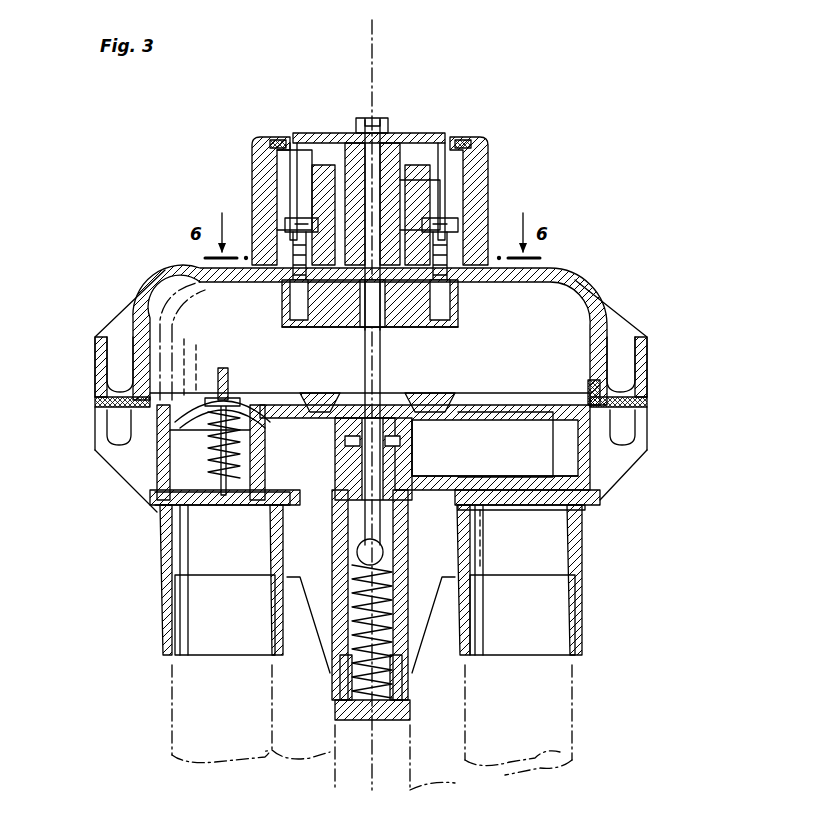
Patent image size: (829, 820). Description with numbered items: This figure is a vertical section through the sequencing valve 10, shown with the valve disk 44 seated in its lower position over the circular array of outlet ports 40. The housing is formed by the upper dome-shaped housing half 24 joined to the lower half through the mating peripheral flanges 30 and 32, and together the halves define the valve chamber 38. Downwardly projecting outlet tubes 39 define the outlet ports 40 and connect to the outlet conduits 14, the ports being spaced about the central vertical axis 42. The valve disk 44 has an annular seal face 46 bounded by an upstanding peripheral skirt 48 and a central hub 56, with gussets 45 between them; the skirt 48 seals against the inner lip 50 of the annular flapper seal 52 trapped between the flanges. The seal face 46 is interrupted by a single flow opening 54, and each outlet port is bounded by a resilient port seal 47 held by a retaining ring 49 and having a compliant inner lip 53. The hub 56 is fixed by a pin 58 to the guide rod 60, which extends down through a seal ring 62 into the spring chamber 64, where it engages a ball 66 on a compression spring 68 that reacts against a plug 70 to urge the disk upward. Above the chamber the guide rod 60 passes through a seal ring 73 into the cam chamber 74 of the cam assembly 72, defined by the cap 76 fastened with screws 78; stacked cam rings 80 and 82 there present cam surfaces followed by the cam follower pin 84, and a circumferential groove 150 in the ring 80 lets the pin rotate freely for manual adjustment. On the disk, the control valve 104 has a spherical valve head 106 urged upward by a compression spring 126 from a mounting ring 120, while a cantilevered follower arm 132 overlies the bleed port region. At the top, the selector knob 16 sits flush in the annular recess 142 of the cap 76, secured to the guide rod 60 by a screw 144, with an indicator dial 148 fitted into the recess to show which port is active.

The sequencing valve 10 is at (628, 186).
The outlet conduits 14 is at (560, 750).
The selector knob 16 is at (412, 133).
The upper dome-shaped housing half 24 is at (558, 270).
The peripheral flange 30 is at (650, 352).
The peripheral flange 32 is at (636, 440).
The valve chamber 38 is at (600, 309).
The outlet tubes 39 is at (160, 642).
The outlet ports 40 is at (195, 540).
The central vertical axis 42 is at (380, 75).
The valve disk 44 is at (470, 408).
The gussets 45 is at (535, 420).
The annular seal face 46 is at (512, 500).
The port seals 47 is at (592, 500).
The peripheral skirt 48 is at (615, 470).
The retaining rings 49 is at (491, 540).
The inner lip 50 is at (574, 384).
The flapper seal 52 is at (650, 404).
The inner lip of port seal 53 is at (265, 512).
The flow opening 54 is at (172, 532).
The central hub 56 is at (430, 398).
The pin 58 is at (352, 393).
The guide rod 60 is at (382, 382).
The seal ring 62 is at (412, 445).
The spring chamber 64 is at (418, 535).
The ball 66 is at (357, 553).
The compression spring 68 is at (350, 646).
The plug 70 is at (356, 722).
The cam assembly 72 is at (445, 206).
The seal ring 73 is at (382, 328).
The cam chamber 74 is at (455, 310).
The cap 76 is at (262, 176).
The screws 78 is at (290, 312).
The cam ring 80 is at (330, 200).
The cam ring 82 is at (280, 280).
The cam follower pin 84 is at (340, 325).
The control valve 104 is at (190, 440).
The valve head 106 is at (200, 400).
The mounting ring 120 is at (185, 495).
The compression spring 126 is at (215, 455).
The follower arm 132 is at (232, 378).
The annular recess 142 is at (470, 142).
The screw 144 is at (358, 118).
The indicator dial 148 is at (283, 137).
The circumferential groove 150 is at (415, 176).